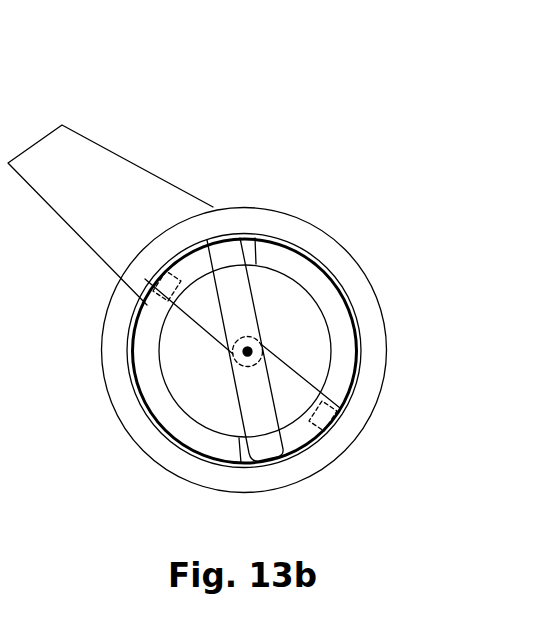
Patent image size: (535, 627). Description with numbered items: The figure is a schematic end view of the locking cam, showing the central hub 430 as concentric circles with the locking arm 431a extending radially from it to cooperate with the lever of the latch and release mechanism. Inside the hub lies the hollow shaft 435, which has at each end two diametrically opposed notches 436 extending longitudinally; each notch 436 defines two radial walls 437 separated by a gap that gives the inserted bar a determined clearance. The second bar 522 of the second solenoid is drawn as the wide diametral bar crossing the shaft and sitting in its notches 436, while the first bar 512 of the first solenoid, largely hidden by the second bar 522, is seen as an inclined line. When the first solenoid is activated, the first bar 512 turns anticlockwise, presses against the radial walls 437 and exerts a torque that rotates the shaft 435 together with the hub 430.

The central hub 430 is at (273, 207).
The hollow shaft 435 is at (323, 265).
The locking arm 431a is at (110, 150).
The notch 436 is at (197, 262).
The radial wall 437 is at (160, 302).
The first bar 512 is at (290, 385).
The second bar 522 is at (253, 388).